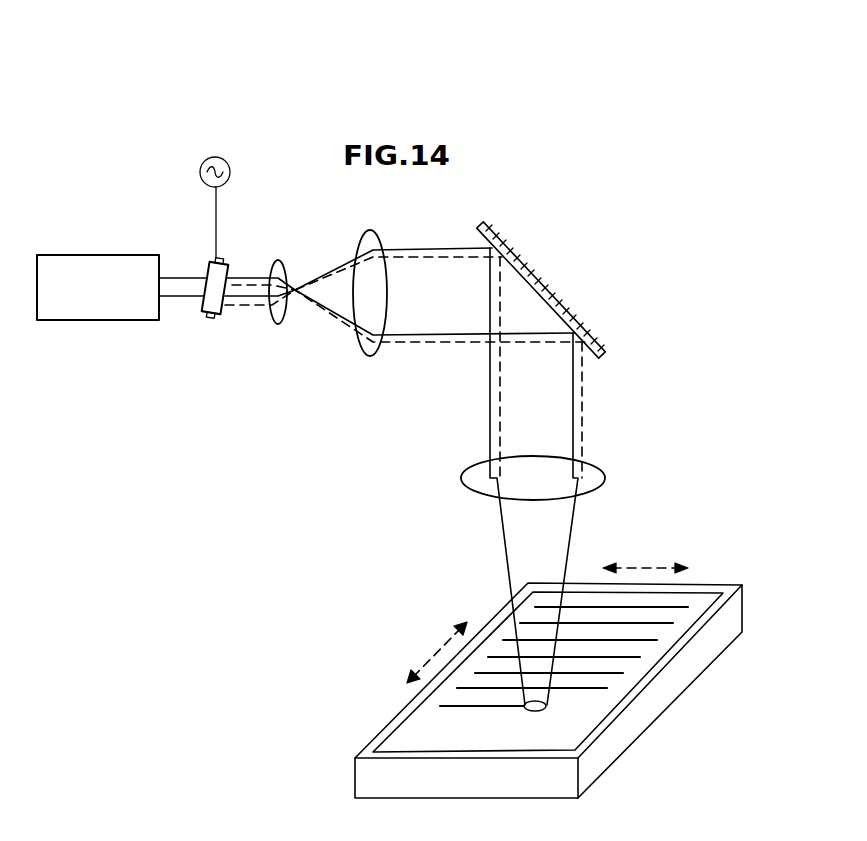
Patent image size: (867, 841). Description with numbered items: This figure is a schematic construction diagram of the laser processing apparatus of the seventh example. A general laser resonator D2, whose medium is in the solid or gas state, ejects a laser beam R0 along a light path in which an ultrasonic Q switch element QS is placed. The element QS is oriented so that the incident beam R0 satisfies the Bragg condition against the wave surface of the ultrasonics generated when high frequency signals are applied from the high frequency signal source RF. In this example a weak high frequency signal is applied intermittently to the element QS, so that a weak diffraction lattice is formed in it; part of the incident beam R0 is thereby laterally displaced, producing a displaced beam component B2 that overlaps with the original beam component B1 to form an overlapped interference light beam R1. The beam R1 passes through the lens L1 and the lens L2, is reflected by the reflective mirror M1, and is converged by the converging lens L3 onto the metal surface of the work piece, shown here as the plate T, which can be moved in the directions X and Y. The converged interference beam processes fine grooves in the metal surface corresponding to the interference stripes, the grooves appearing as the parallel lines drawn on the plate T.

The laser resonator D2 is at (66, 268).
The high frequency signal source RF is at (226, 180).
The laser beam R0 is at (173, 283).
The displaced beam component B2 is at (238, 277).
The original beam component B1 is at (252, 306).
The ultrasonic Q switch element QS is at (220, 316).
The lens L1 is at (285, 270).
The lens L2 is at (378, 237).
The converging lens L3 is at (605, 478).
The reflective mirror M1 is at (543, 288).
The overlapped interference light beam R1 is at (310, 306).
The X scanning direction X is at (633, 568).
The Y scanning direction Y is at (423, 663).
The workpiece table T is at (628, 728).